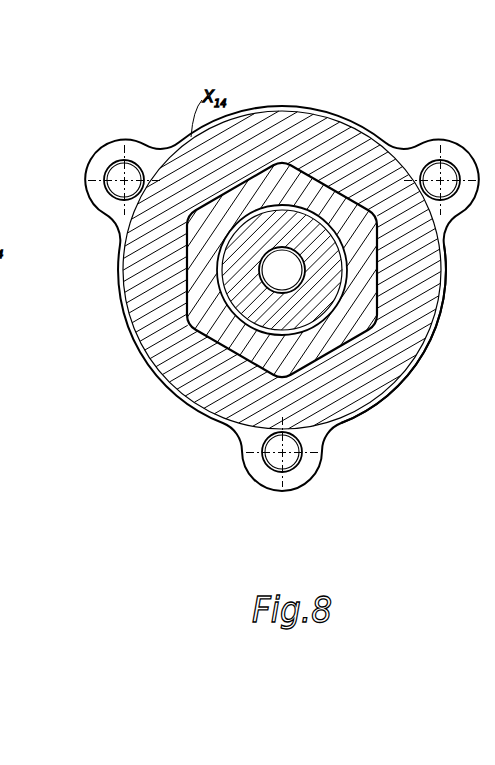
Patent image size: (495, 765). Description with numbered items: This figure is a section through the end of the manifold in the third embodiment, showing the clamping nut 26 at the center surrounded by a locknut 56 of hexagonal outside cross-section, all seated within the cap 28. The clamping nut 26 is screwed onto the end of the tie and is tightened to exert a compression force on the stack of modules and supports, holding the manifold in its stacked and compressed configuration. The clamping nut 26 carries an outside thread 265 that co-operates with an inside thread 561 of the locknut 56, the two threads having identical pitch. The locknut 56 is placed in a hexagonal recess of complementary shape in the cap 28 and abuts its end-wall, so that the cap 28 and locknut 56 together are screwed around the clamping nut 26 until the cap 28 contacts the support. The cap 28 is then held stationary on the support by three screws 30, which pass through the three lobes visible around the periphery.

The clamping nut 26 is at (123, 310).
The cap 28 is at (388, 398).
The screws 30 is at (148, 143).
The locknut 56 is at (422, 358).
The inside thread 561 is at (170, 385).
The outside thread 265 is at (350, 200).